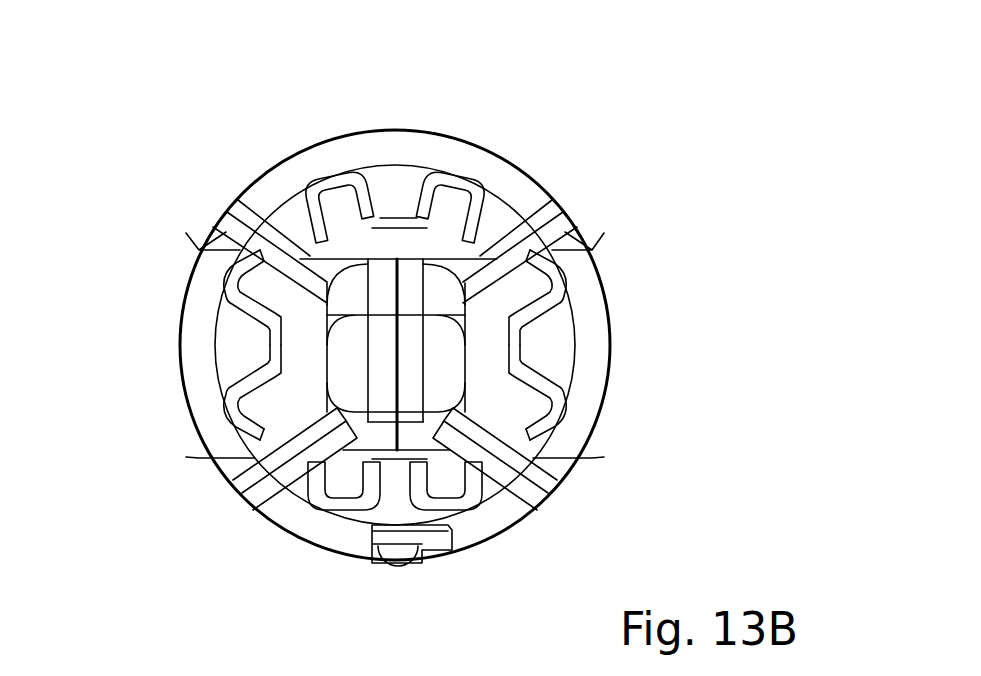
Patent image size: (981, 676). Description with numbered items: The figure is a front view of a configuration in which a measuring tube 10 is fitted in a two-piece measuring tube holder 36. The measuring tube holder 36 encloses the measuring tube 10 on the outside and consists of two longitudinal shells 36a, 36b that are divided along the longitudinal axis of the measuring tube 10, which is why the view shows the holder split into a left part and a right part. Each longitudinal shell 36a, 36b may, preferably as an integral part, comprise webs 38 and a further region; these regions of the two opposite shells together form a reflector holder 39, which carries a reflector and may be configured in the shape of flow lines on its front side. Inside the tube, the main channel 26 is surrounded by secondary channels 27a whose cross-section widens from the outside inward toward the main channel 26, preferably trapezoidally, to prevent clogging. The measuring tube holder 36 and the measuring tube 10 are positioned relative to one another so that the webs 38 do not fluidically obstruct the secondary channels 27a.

The measuring tube 10 is at (447, 185).
The main channel 26 is at (397, 240).
The secondary channels 27a is at (343, 210).
The measuring tube holder 36 is at (250, 184).
The longitudinal shell 36a is at (168, 235).
The longitudinal shell 36b is at (610, 255).
The webs 38 is at (565, 222).
The reflector holder 39 is at (428, 362).